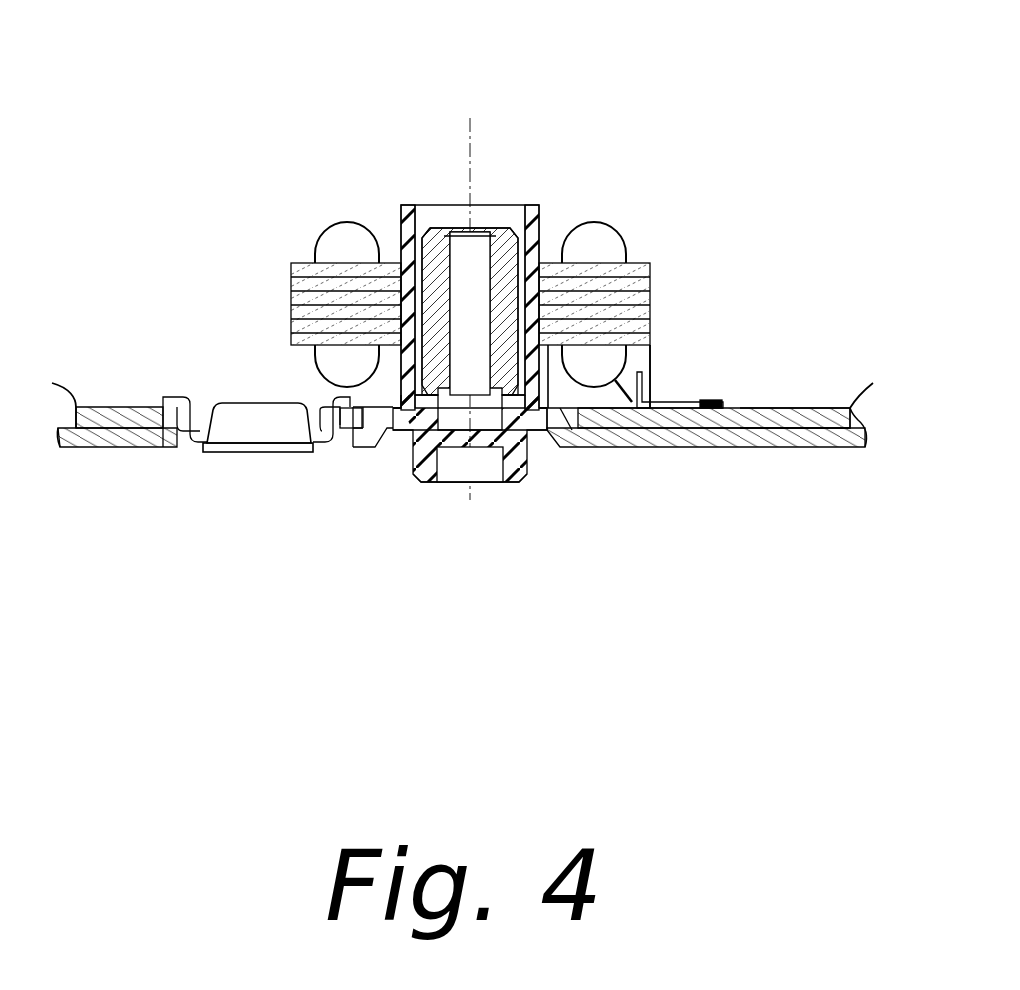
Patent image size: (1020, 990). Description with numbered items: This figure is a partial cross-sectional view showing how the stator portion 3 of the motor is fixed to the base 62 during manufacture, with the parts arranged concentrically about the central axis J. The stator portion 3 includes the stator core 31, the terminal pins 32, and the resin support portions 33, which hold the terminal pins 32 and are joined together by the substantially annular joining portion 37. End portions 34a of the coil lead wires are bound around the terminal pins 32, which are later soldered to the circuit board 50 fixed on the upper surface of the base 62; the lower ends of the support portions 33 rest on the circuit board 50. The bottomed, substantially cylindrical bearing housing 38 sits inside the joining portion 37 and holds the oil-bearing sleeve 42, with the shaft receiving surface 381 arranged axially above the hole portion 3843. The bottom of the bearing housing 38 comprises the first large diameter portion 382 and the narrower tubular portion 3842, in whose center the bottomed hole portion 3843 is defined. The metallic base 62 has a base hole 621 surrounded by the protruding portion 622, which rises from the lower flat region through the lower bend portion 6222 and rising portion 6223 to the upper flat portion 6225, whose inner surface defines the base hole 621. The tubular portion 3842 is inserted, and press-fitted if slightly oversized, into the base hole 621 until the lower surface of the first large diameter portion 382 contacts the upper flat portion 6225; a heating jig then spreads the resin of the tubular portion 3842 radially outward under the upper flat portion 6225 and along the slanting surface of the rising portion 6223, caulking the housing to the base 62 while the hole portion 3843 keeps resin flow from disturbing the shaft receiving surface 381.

The stator portion 3 is at (623, 237).
The stator core 31 is at (578, 250).
The terminal pins 32 is at (700, 400).
The support portions 33 is at (662, 390).
The end portions of the lead wires 34a is at (700, 397).
The joining portion 37 is at (313, 250).
The bearing housing 38 is at (398, 215).
The shaft receiving surface 381 is at (477, 250).
The first large diameter portion 382 is at (393, 410).
The tubular portion 3842 is at (552, 447).
The hole portion 3843 is at (477, 460).
The sleeve 42 is at (438, 255).
The circuit board 50 is at (790, 413).
The base 62 is at (142, 440).
The base hole 621 is at (433, 482).
The protruding portion 622 is at (395, 440).
The lower bend portion 6222 is at (395, 378).
The rising portion 6223 is at (763, 410).
The upper flat portion 6225 is at (548, 440).
The central axis J is at (470, 137).